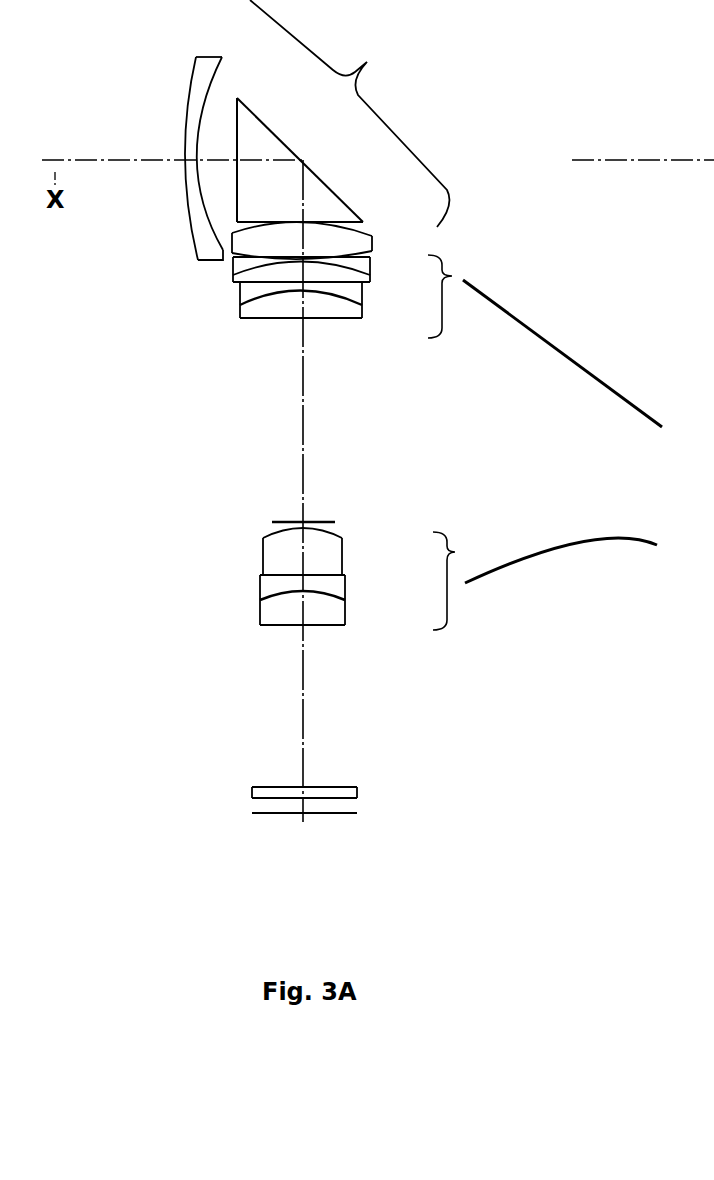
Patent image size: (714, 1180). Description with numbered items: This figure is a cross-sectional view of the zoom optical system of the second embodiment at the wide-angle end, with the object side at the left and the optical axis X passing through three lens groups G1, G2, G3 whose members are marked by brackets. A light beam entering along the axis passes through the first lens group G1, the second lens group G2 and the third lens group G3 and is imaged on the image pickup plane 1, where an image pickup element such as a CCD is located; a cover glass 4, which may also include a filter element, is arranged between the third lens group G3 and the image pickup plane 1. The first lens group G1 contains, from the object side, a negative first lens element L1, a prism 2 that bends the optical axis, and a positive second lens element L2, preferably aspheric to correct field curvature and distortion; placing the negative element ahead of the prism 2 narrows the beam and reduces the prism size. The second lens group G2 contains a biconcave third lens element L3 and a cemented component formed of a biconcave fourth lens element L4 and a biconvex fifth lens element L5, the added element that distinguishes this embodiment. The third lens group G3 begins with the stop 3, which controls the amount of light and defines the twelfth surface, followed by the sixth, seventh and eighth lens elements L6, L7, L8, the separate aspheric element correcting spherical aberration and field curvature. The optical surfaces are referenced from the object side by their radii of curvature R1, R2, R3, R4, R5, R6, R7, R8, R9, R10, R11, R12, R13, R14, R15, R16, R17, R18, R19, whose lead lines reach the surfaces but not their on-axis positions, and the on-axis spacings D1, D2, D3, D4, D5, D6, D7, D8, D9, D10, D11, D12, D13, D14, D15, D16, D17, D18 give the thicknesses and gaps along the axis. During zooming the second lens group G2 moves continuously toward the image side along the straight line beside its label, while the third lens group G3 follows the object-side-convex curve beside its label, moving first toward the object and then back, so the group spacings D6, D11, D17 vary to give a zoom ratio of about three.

The image pickup plane 1 is at (262, 814).
The prism 2 is at (243, 168).
The stop 3 is at (299, 495).
The cover glass 4 is at (316, 784).
The first lens group G1 is at (280, 145).
The second lens group G2 is at (405, 276).
The third lens group G3 is at (399, 580).
The first lens element L1 is at (174, 131).
The second lens element L2 is at (290, 264).
The third lens element L3 is at (303, 309).
The fourth lens element L4 is at (332, 335).
The fifth lens element L5 is at (332, 350).
The sixth lens element L6 is at (298, 533).
The seventh lens element L7 is at (297, 619).
The eighth lens element L8 is at (333, 646).
The radius of curvature of first optical surface R1 is at (185, 146).
The radius of curvature of second optical surface R2 is at (207, 137).
The radius of curvature of third optical surface R3 is at (232, 142).
The radius of curvature of fourth optical surface R4 is at (232, 238).
The radius of curvature of fifth optical surface R5 is at (245, 256).
The radius of curvature of sixth optical surface R6 is at (255, 272).
The radius of curvature of seventh optical surface R7 is at (348, 310).
The radius of curvature of eighth optical surface R8 is at (262, 292).
The radius of curvature of ninth optical surface R9 is at (317, 294).
The radius of curvature of tenth optical surface R10 is at (312, 322).
The radius of curvature of eleventh optical surface R11 is at (297, 320).
The radius of curvature of twelfth optical surface R12 is at (320, 515).
The radius of curvature of thirteenth optical surface R13 is at (268, 523).
The radius of curvature of fourteenth optical surface R14 is at (283, 560).
The radius of curvature of fifteenth optical surface R15 is at (314, 606).
The radius of curvature of sixteenth optical surface R16 is at (293, 590).
The radius of curvature of seventeenth optical surface R17 is at (288, 627).
The radius of curvature of eighteenth optical surface R18 is at (315, 787).
The radius of curvature of nineteenth optical surface R19 is at (327, 799).
The first on-axis surface spacing D1 is at (192, 173).
The second on-axis surface spacing D2 is at (222, 176).
The third on-axis surface spacing D3 is at (272, 176).
The fourth on-axis surface spacing D4 is at (312, 222).
The fifth on-axis surface spacing D5 is at (320, 218).
The sixth on-axis surface spacing D6 is at (335, 222).
The seventh on-axis surface spacing D7 is at (372, 240).
The eighth on-axis surface spacing D8 is at (250, 323).
The ninth on-axis surface spacing D9 is at (278, 316).
The tenth on-axis surface spacing D10 is at (306, 335).
The eleventh on-axis surface spacing D11 is at (300, 424).
The twelfth on-axis surface spacing D12 is at (303, 526).
The thirteenth on-axis surface spacing D13 is at (300, 541).
The fourteenth on-axis surface spacing D14 is at (293, 587).
The fifteenth on-axis surface spacing D15 is at (293, 608).
The sixteenth on-axis surface spacing D16 is at (313, 630).
The seventeenth on-axis surface spacing D17 is at (300, 707).
The eighteenth on-axis surface spacing D18 is at (283, 785).